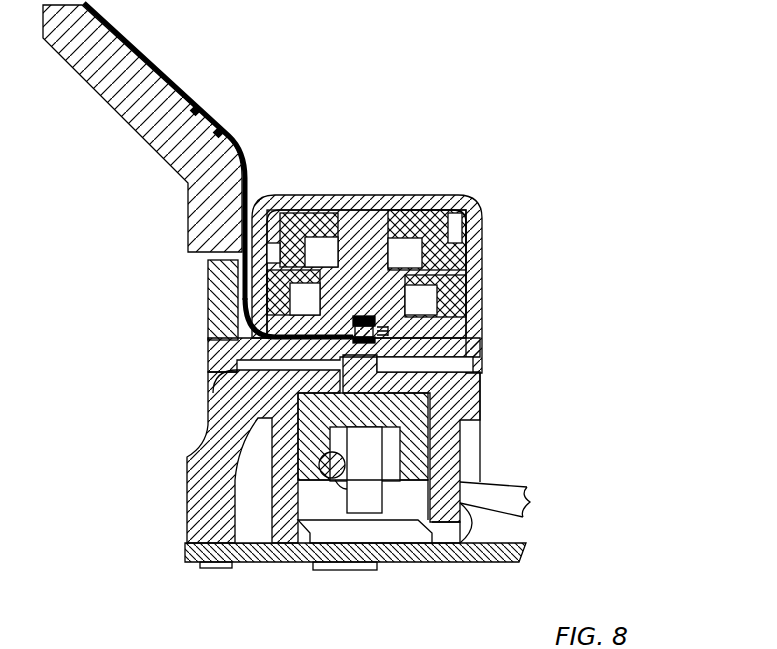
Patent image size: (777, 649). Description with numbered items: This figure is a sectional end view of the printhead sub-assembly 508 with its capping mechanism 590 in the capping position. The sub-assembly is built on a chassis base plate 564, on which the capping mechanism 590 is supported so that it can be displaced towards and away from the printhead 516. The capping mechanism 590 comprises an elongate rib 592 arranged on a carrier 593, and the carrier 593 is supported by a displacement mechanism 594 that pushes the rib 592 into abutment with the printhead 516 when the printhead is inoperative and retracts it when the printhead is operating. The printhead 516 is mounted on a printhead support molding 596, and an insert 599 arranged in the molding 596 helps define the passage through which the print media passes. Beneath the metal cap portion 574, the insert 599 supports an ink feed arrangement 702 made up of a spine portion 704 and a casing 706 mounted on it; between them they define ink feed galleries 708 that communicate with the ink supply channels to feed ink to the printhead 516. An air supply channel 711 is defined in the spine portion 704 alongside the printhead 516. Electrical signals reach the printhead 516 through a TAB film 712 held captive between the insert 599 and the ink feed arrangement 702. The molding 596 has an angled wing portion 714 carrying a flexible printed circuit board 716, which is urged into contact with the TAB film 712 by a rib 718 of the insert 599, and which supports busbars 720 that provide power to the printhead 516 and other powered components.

The printhead sub-assembly 508 is at (379, 313).
The printhead 516 is at (385, 319).
The chassis base plate 564 is at (410, 553).
The cap portion 574 is at (462, 197).
The capping mechanism 590 is at (403, 362).
The elongate rib 592 is at (365, 355).
The carrier 593 is at (350, 367).
The displacement mechanism 594 is at (395, 493).
The printhead support molding 596 is at (215, 383).
The insert 599 is at (260, 322).
The ink feed arrangement 702 is at (457, 227).
The spine portion 704 is at (363, 245).
The casing 706 is at (400, 225).
The ink feed galleries 708 is at (305, 303).
The air supply channel 711 is at (377, 331).
The TAB film 712 is at (237, 343).
The angled wing portion 714 is at (112, 98).
The flexible printed circuit board 716 is at (138, 54).
The rib 718 is at (235, 273).
The busbars 720 is at (220, 134).